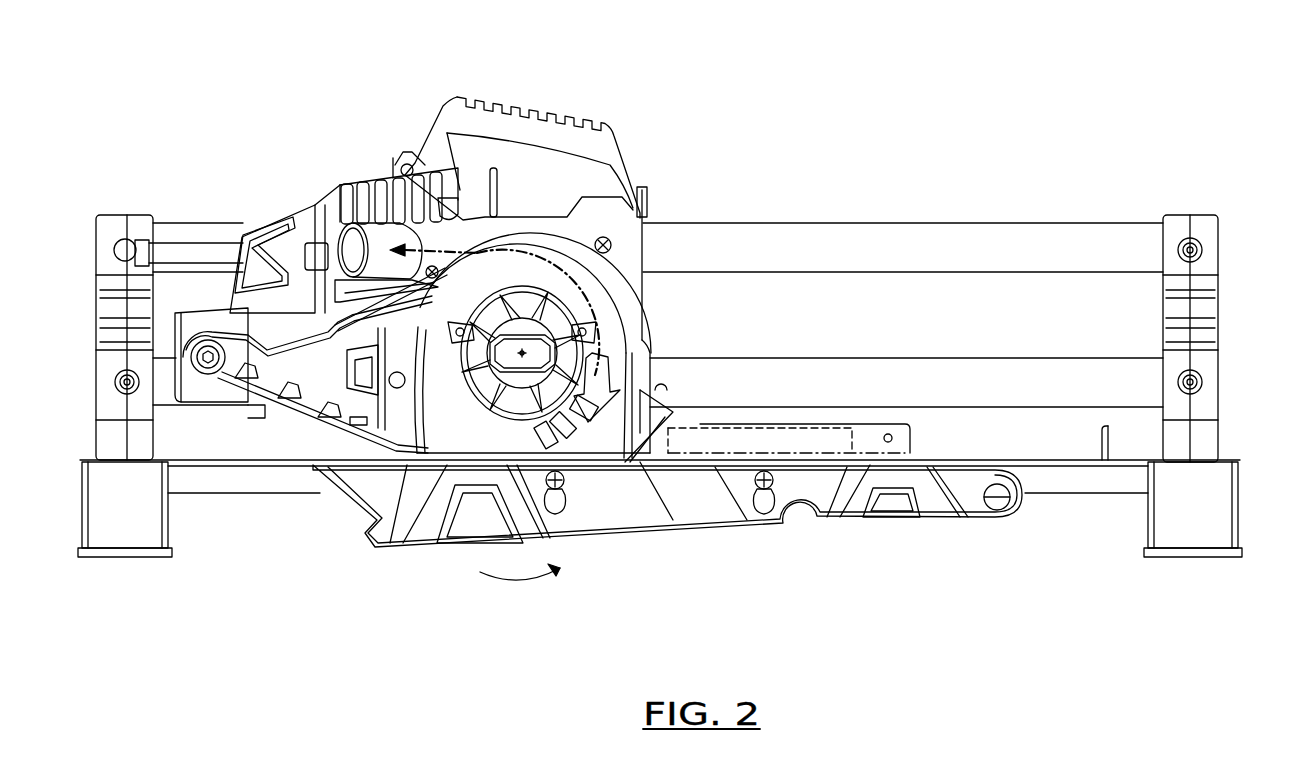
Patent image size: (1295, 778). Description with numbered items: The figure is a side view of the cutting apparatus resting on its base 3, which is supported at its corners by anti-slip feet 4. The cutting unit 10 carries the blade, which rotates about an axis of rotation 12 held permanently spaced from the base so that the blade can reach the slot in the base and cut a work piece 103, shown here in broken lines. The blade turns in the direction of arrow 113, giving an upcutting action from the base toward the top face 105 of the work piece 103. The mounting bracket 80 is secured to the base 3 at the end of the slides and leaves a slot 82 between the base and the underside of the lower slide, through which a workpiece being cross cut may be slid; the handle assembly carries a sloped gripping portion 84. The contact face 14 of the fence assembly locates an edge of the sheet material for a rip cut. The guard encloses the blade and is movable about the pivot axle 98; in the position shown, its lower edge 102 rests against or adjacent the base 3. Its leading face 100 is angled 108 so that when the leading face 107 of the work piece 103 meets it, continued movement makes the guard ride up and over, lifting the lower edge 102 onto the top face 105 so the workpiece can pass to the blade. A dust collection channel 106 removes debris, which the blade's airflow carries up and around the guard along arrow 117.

The base 3 is at (1073, 483).
The supporting feet 4 is at (126, 531).
The cutting unit 10 is at (450, 197).
The axis of rotation 12 is at (518, 362).
The contact face 14 is at (872, 446).
The second mounting bracket 80 is at (126, 218).
The slot 82 is at (1003, 440).
The gripping portion 84 is at (532, 104).
The pivot axle 98 is at (212, 368).
The leading face of the guard 100 is at (640, 433).
The lower edge of the guard 102 is at (600, 420).
The work piece 103 is at (815, 440).
The top face of the work piece 105 is at (825, 360).
The dust collection channel 106 is at (370, 170).
The leading face of the workpiece 107 is at (725, 356).
The angle of the leading face 108 is at (735, 520).
The direction of blade rotation 113 is at (518, 582).
The airflow direction 117 is at (645, 225).